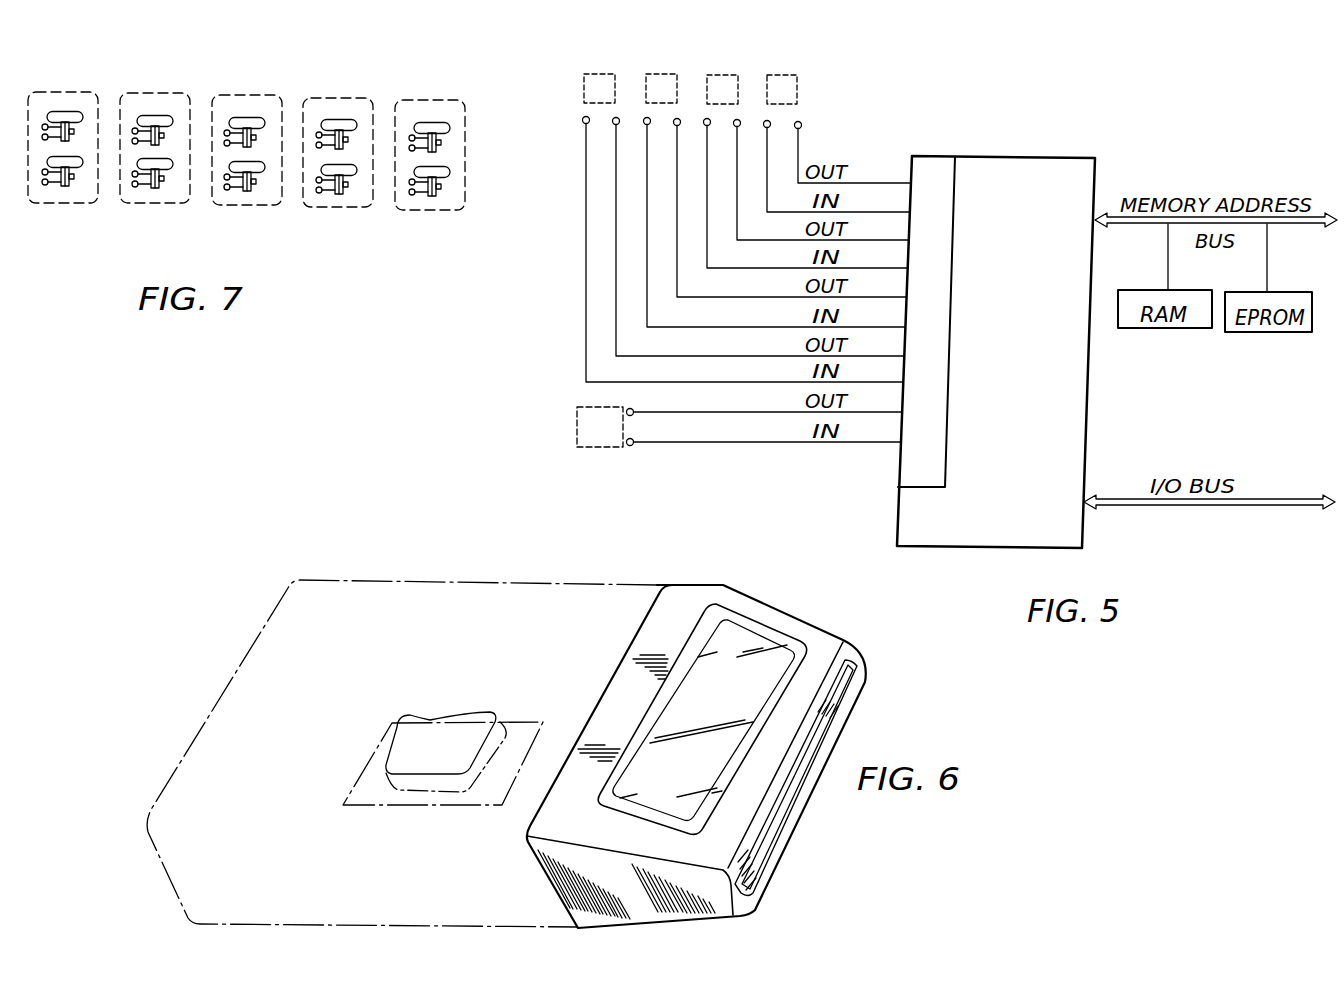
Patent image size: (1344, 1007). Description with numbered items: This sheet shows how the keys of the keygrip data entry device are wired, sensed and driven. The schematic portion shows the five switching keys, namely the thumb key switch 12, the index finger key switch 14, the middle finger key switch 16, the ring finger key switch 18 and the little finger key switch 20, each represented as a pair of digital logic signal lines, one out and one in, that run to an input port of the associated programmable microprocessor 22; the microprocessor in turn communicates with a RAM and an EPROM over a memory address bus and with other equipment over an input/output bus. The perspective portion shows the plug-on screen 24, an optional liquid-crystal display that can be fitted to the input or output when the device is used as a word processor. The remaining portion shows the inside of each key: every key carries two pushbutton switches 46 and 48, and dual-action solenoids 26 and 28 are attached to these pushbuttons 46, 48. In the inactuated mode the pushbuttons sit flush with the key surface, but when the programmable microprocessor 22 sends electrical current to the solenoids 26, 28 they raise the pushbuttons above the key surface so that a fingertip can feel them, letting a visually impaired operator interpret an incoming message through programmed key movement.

In FIG. 7, the switch 12 is at (433, 93).
In FIG. 5, the switch 12 is at (605, 427).
In FIG. 7, the switch 14 is at (340, 92).
In FIG. 5, the switch 14 is at (782, 89).
In FIG. 7, the switch 16 is at (253, 92).
In FIG. 5, the switch 16 is at (722, 89).
In FIG. 7, the switch 18 is at (173, 92).
In FIG. 5, the switch 18 is at (661, 88).
In FIG. 7, the switch 20 is at (72, 93).
In FIG. 5, the switch 20 is at (599, 88).
In FIG. 5, the programmable microprocessor 22 is at (996, 352).
In FIG. 6, the plug-on screen 24 is at (812, 822).
In FIG. 7, the dual-action solenoid 26 is at (148, 188).
In FIG. 7, the dual-action solenoid 28 is at (70, 136).
In FIG. 7, the pushbutton switch 46 is at (414, 124).
In FIG. 7, the pushbutton switch 48 is at (450, 172).